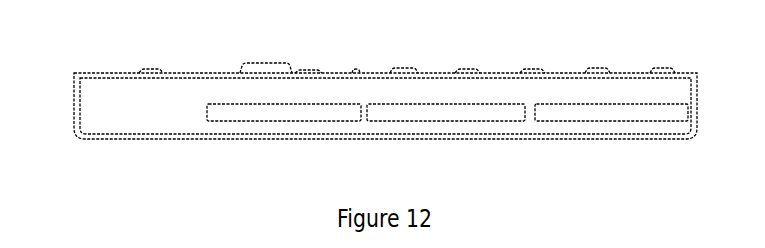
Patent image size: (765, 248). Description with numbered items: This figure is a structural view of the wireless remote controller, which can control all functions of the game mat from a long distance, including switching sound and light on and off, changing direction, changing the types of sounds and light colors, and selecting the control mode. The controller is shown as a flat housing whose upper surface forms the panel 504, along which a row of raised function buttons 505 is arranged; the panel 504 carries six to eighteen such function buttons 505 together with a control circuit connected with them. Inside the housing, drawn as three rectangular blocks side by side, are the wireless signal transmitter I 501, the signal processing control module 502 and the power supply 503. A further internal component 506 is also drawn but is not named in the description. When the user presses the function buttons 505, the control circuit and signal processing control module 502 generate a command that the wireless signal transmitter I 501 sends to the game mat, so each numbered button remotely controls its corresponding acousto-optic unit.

The panel 504 is at (108, 72).
The function buttons 505 is at (528, 68).
The power supply 503 is at (664, 68).
The first battery 506 is at (291, 113).
The wireless signal transmitter I 501 is at (447, 112).
The signal processing control module 502 is at (588, 114).